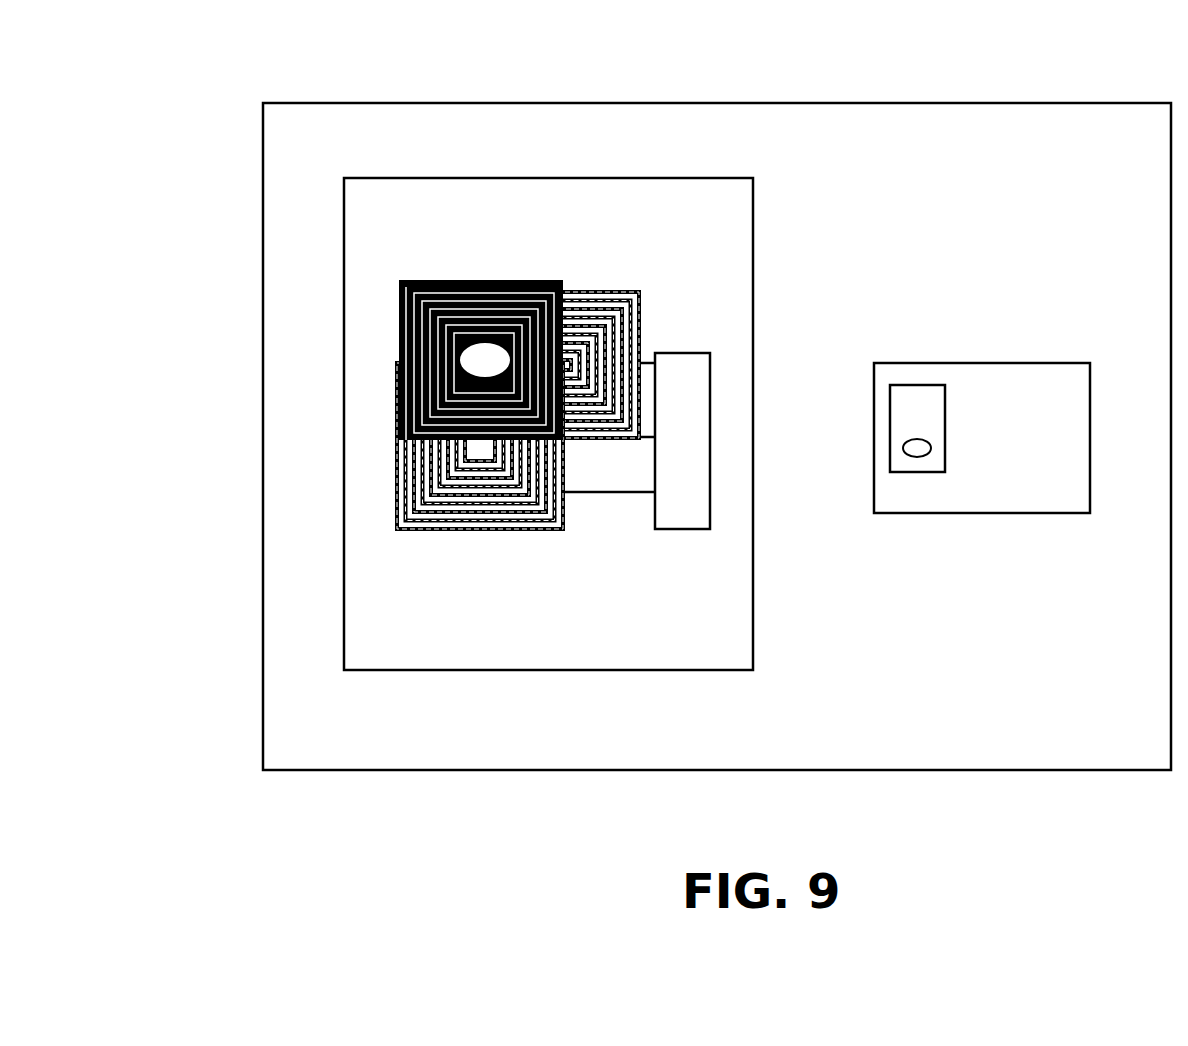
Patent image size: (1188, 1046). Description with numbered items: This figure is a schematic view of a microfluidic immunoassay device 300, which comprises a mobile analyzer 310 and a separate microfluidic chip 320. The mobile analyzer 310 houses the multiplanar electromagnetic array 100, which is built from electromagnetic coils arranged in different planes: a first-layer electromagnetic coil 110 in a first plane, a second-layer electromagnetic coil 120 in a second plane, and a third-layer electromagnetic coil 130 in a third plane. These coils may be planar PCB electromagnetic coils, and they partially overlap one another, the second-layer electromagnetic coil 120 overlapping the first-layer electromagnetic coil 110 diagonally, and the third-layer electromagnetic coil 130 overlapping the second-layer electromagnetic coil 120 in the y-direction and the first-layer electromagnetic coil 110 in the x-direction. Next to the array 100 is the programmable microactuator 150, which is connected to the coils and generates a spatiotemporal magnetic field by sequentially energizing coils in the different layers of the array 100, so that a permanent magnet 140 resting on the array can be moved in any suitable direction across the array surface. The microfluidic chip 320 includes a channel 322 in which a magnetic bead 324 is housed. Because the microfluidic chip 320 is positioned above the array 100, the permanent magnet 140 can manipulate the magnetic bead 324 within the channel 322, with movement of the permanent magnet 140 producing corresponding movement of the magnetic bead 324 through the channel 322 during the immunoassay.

The microfluidic immunoassay device 300 is at (317, 72).
The mobile analyzer 310 is at (262, 223).
The multiplanar electromagnetic array 100 is at (340, 395).
The first-layer electromagnetic coil 110 is at (640, 298).
The second-layer electromagnetic coil 120 is at (502, 287).
The third-layer electromagnetic coil 130 is at (397, 510).
The permanent magnet 140 is at (405, 333).
The programmable microactuator 150 is at (713, 358).
The microfluidic chip 320 is at (972, 362).
The channel 322 is at (935, 478).
The magnetic bead 324 is at (930, 450).